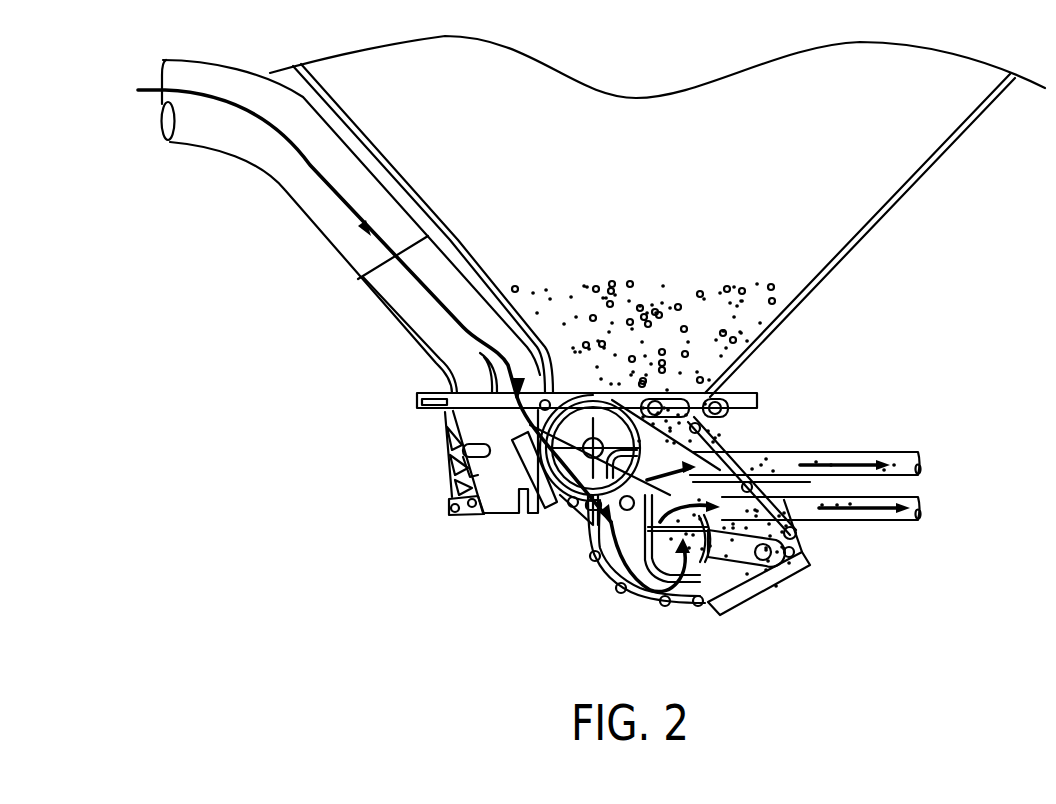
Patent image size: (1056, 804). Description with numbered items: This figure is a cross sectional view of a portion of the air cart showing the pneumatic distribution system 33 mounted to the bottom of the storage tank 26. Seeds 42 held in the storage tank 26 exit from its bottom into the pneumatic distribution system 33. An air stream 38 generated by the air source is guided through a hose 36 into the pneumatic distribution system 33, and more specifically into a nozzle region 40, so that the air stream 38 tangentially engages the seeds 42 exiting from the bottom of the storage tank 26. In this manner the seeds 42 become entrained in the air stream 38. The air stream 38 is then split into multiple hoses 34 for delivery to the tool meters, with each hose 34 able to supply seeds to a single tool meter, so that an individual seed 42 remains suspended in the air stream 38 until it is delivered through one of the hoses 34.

The storage tank 26 is at (870, 238).
The pneumatic distribution system 33 is at (340, 495).
The hoses 34 is at (935, 508).
The hose 36 is at (295, 205).
The air stream 38 is at (364, 258).
The nozzle region 40 is at (717, 607).
The seeds 42 is at (747, 570).